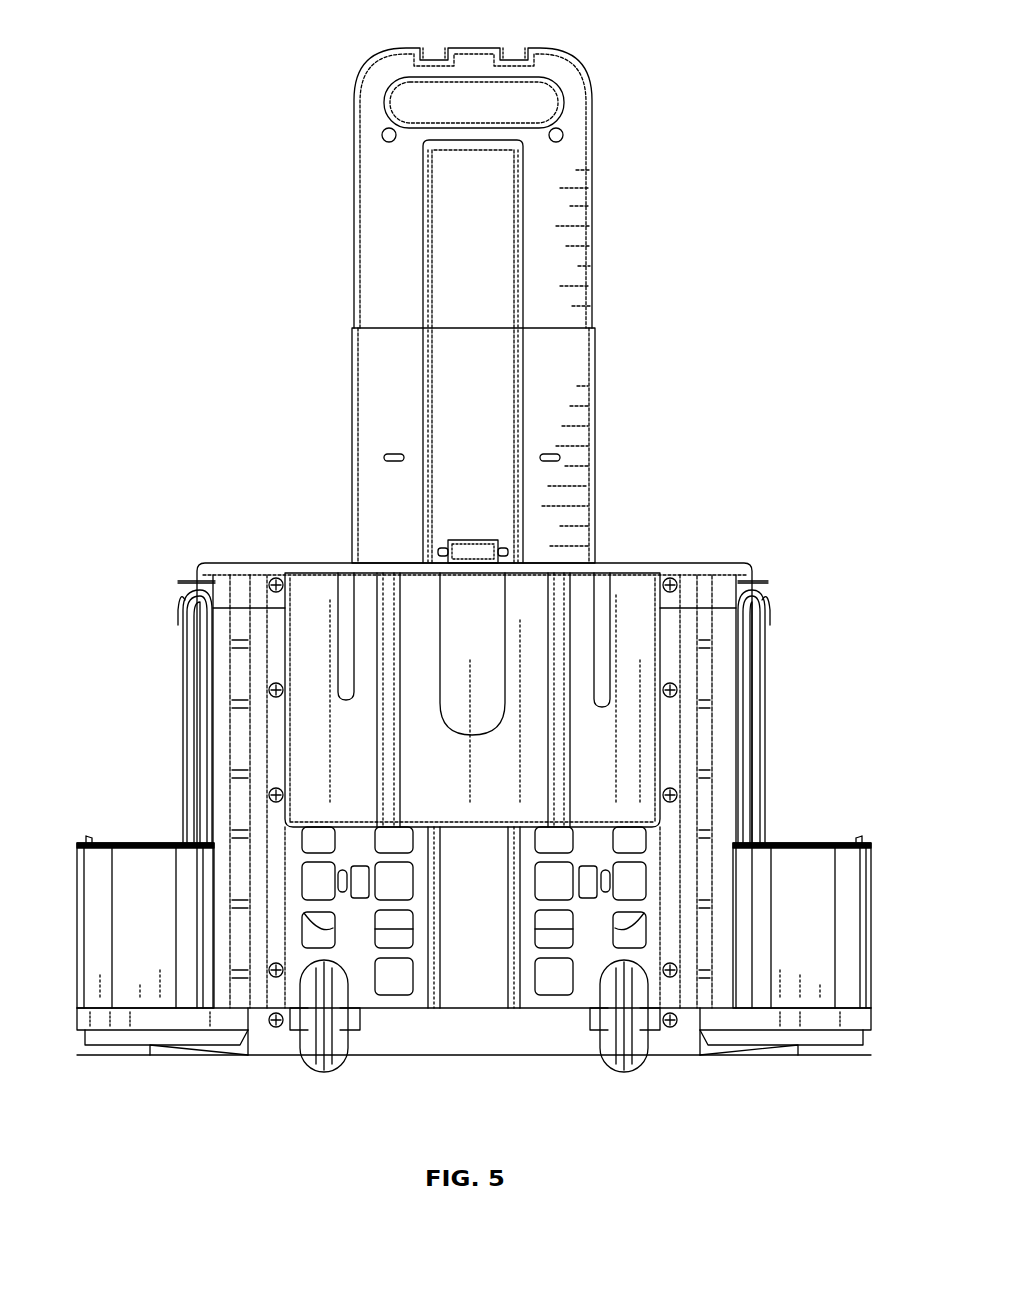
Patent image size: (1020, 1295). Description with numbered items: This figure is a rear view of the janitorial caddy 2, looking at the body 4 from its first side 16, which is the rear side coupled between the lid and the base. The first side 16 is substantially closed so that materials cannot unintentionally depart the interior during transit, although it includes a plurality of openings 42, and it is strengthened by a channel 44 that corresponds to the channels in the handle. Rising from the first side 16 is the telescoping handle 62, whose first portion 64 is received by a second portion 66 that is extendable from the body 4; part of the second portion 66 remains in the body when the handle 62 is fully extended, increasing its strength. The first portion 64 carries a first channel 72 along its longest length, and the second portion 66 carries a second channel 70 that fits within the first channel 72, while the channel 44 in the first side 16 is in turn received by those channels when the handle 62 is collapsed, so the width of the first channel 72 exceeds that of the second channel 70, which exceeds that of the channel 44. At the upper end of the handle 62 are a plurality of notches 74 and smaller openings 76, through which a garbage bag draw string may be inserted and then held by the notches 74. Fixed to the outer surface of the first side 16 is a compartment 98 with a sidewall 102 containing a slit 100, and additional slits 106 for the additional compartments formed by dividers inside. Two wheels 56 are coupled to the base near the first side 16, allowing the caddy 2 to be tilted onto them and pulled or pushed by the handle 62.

The caddy 2 is at (233, 503).
The body 4 is at (740, 566).
The first side 16 is at (676, 622).
The openings 42 is at (390, 995).
The channel 44 is at (487, 992).
The wheels 56 is at (320, 1070).
The handle 62 is at (575, 88).
The first portion 64 is at (575, 218).
The second portion 66 is at (575, 418).
The second channel 70 is at (460, 412).
The first channel 72 is at (490, 192).
The notches 74 is at (435, 57).
The openings 76 is at (382, 134).
The compartment 98 is at (600, 775).
The slit 100 is at (604, 585).
The sidewall 102 is at (640, 592).
The slits 106 is at (343, 694).